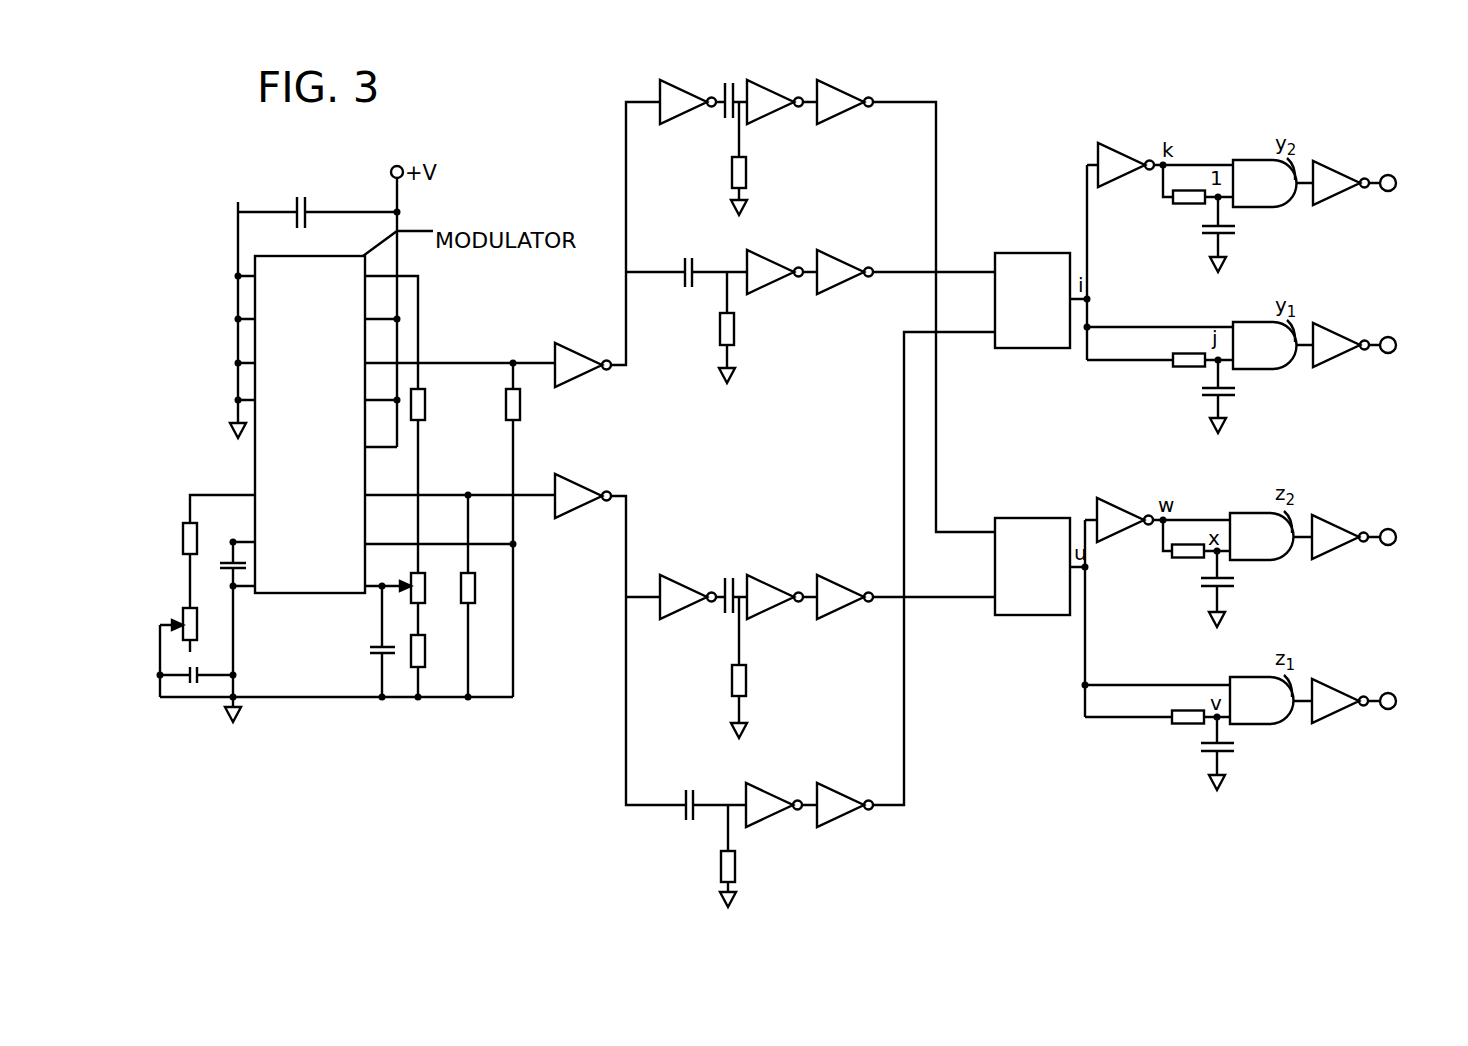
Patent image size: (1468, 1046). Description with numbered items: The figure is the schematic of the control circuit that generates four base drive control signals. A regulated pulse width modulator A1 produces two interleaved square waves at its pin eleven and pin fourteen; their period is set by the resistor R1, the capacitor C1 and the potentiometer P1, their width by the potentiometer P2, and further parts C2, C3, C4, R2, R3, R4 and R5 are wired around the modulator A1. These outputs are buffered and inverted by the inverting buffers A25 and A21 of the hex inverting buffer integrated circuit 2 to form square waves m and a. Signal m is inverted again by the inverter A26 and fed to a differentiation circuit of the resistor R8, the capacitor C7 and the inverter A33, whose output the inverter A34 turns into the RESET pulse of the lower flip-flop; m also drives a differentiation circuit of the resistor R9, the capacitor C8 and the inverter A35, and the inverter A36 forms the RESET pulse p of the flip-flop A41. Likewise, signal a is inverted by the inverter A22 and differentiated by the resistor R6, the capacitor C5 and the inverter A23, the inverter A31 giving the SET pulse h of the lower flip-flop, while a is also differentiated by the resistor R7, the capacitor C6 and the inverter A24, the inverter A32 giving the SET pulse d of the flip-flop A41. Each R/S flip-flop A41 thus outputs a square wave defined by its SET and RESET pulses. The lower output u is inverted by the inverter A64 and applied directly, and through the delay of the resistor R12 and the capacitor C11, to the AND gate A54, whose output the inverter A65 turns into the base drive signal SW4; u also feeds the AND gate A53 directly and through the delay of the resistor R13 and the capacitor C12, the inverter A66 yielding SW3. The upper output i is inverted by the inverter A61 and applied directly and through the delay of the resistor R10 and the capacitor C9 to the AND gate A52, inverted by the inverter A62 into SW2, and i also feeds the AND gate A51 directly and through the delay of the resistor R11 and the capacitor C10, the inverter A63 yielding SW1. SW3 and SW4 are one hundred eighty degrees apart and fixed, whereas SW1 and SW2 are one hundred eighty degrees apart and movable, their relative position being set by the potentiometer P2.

The regulated pulse width modulator A1 is at (318, 447).
The hex inverting buffer integrated circuit 2 is at (696, 446).
The capacitor C1 is at (225, 532).
The capacitor C2 is at (192, 697).
The capacitor C3 is at (316, 203).
The capacitor C4 is at (364, 650).
The capacitor C5 is at (719, 113).
The capacitor C6 is at (695, 288).
The capacitor C7 is at (718, 609).
The capacitor C8 is at (693, 822).
The capacitor C9 is at (1235, 237).
The capacitor C10 is at (1240, 402).
The capacitor C11 is at (1240, 592).
The capacitor C12 is at (1240, 759).
The resistor R1 is at (174, 547).
The resistor R2 is at (433, 404).
The resistor R3 is at (433, 651).
The resistor R4 is at (527, 404).
The resistor R5 is at (478, 605).
The resistor R6 is at (754, 167).
The resistor R7 is at (743, 323).
The resistor R8 is at (754, 674).
The resistor R9 is at (743, 865).
The resistor R10 is at (1177, 219).
The resistor R11 is at (1176, 380).
The resistor R12 is at (1177, 573).
The resistor R13 is at (1176, 739).
The potentiometer P1 is at (198, 616).
The potentiometer P2 is at (398, 575).
The inverting buffer A21 is at (583, 354).
The inverter A22 is at (684, 87).
The inverter A23 is at (775, 87).
The inverter A24 is at (775, 257).
The inverting buffer A25 is at (583, 514).
The inverter A26 is at (684, 583).
The inverter A31 is at (845, 87).
The inverter A32 is at (845, 257).
The inverting buffer A33 is at (775, 583).
The inverter A34 is at (845, 583).
The inverter A35 is at (774, 793).
The inverter A36 is at (845, 793).
The R/S flip-flop A41 is at (1032, 434).
The AND gate A51 is at (1264, 344).
The AND gate A52 is at (1264, 182).
The AND gate A53 is at (1261, 699).
The AND gate A54 is at (1261, 535).
The inverter A61 is at (1126, 151).
The inverter A62 is at (1341, 168).
The inverter A63 is at (1341, 330).
The inverter A64 is at (1125, 506).
The inverter A65 is at (1340, 522).
The inverter A66 is at (1340, 686).
The square wave base drive signal SW1 is at (1406, 332).
The square wave base drive signal SW2 is at (1406, 170).
The square wave base drive signal SW3 is at (1406, 690).
The square wave base drive signal SW4 is at (1406, 525).